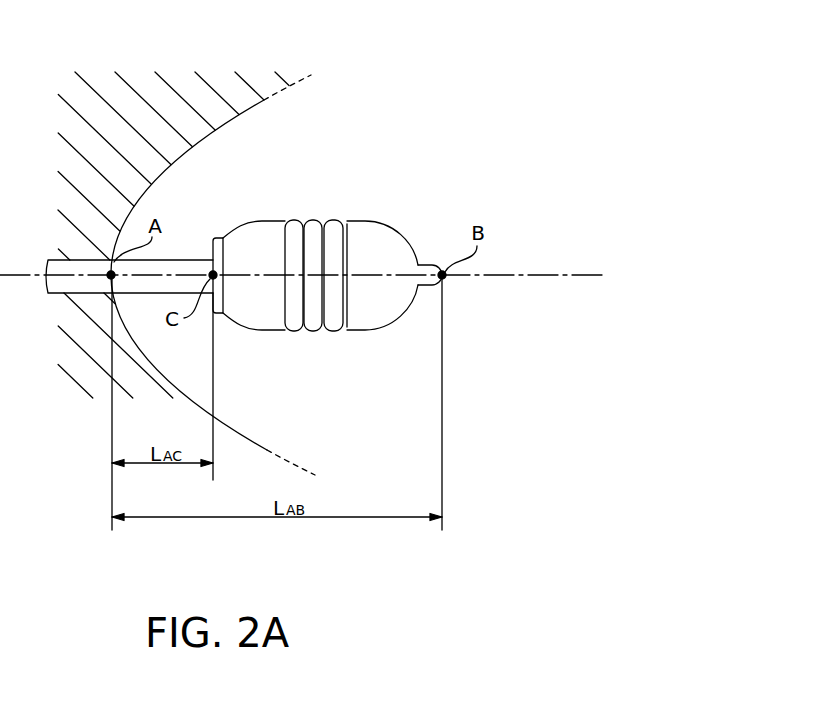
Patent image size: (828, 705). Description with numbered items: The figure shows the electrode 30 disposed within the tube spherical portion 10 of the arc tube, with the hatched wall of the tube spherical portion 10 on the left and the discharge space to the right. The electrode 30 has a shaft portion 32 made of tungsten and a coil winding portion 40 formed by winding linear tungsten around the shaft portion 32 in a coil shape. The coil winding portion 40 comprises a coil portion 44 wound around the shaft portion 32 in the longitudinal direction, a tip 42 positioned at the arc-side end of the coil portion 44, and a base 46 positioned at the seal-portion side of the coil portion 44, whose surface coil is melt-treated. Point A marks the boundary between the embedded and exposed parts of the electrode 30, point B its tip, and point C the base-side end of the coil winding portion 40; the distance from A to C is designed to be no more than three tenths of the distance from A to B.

The tube spherical portion 10 is at (163, 93).
The electrode 30 is at (363, 223).
The shaft portion 32 is at (173, 258).
The coil winding portion 40 is at (328, 237).
The tip 42 is at (392, 255).
The coil portion 44 is at (281, 204).
The base 46 is at (215, 216).